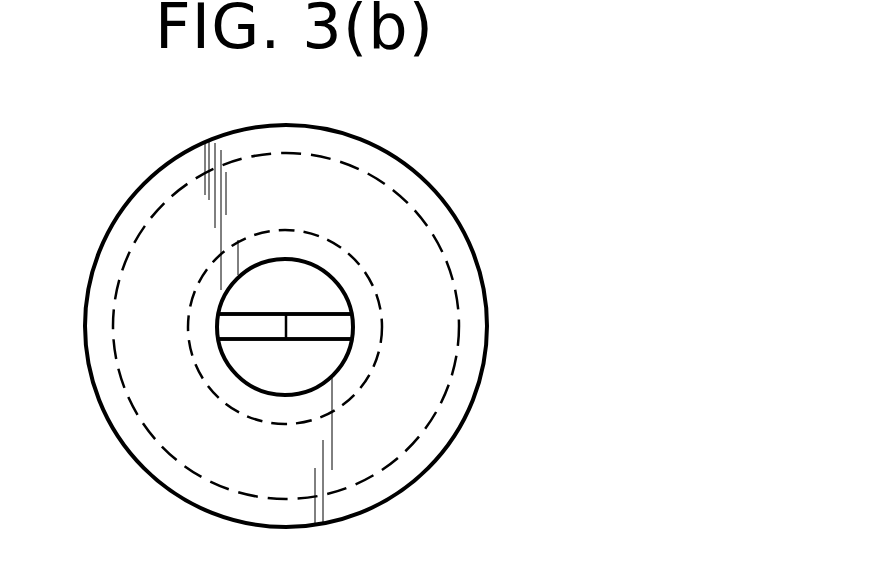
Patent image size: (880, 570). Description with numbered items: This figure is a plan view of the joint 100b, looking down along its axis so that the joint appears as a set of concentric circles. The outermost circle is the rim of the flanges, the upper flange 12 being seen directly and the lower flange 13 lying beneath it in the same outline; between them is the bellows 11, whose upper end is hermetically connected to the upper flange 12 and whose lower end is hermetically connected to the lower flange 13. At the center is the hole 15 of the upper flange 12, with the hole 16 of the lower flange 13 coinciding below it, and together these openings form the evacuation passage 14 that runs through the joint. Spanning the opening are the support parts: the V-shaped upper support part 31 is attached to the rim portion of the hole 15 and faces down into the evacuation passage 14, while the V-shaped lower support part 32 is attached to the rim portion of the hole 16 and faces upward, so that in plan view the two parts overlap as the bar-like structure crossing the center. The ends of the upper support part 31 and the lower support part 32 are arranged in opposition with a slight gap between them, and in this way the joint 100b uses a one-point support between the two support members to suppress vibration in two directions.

The joint 100b is at (328, 312).
The bellows 11 is at (408, 405).
The upper flange 12 is at (346, 326).
The lower flange 13 is at (447, 205).
The evacuation passage 14 is at (308, 382).
The hole 15 is at (285, 285).
The hole 16 is at (282, 285).
The upper support part 31 is at (414, 281).
The lower support part 32 is at (333, 313).